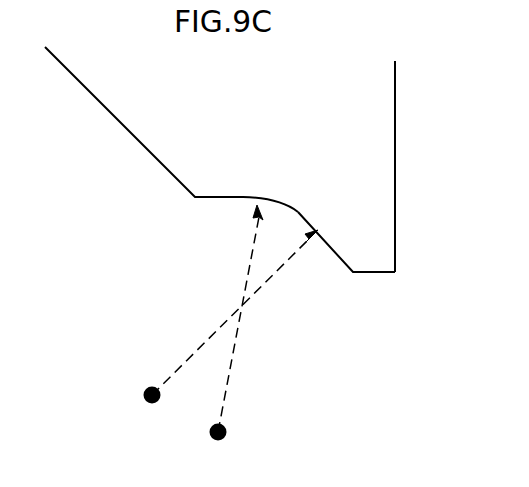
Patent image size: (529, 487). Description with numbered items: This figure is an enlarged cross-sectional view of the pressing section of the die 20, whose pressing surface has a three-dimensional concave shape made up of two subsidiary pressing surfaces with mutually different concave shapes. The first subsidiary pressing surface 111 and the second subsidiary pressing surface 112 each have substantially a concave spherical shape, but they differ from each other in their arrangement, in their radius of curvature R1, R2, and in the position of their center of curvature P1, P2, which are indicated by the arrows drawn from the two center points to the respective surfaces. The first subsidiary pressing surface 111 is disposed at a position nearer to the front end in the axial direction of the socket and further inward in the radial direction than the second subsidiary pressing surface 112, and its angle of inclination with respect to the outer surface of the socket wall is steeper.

The die 20 is at (395, 183).
The first subsidiary pressing surface 111 is at (328, 247).
The second subsidiary pressing surface 112 is at (243, 198).
The radius of curvature R1 is at (227, 318).
The radius of curvature R2 is at (233, 340).
The center of curvature P1 is at (129, 400).
The center of curvature P2 is at (215, 447).